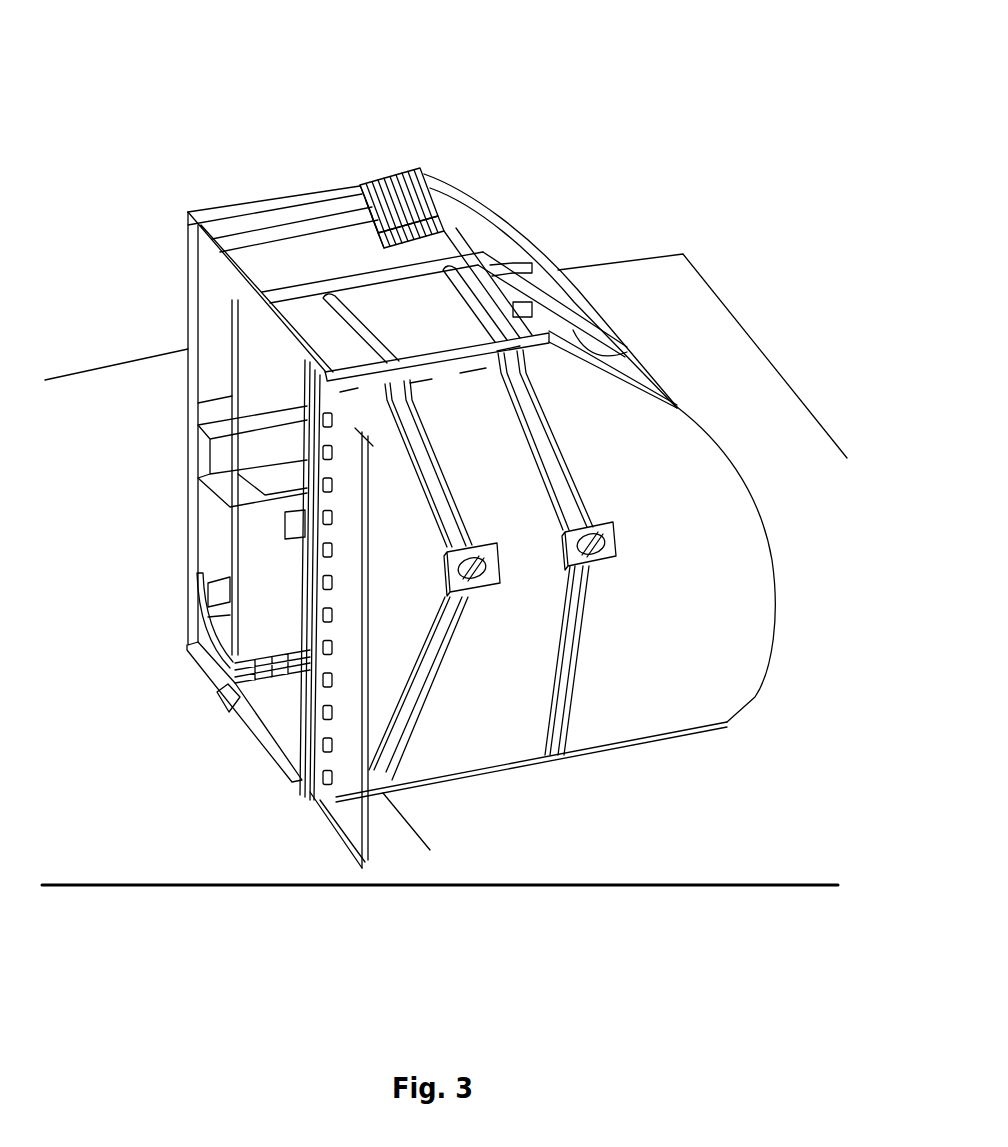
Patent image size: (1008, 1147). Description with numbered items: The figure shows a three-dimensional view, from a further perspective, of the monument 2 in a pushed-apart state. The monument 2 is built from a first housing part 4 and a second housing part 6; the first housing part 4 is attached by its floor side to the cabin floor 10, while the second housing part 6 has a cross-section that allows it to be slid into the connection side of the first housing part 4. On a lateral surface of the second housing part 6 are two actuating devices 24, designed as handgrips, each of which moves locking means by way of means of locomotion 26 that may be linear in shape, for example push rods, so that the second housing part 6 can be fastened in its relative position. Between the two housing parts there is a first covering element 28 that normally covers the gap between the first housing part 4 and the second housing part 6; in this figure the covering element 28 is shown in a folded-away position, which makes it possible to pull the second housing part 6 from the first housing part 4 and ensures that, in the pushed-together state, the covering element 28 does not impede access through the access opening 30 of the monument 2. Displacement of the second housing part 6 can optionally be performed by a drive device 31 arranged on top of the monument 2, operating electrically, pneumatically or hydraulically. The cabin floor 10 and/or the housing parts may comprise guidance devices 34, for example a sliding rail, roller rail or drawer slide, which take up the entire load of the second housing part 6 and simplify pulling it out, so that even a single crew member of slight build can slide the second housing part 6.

The monument 2 is at (432, 148).
The first housing part 4 is at (580, 262).
The second housing part 6 is at (740, 440).
The cabin floor 10 is at (763, 763).
The actuating devices 24 is at (482, 547).
The means of locomotion 26 is at (430, 673).
The first covering element 28 is at (340, 820).
The access opening 30 is at (236, 700).
The drive device 31 is at (390, 186).
The guidance devices 34 is at (413, 827).